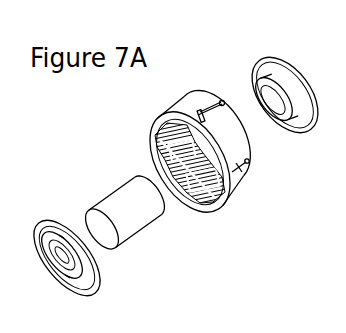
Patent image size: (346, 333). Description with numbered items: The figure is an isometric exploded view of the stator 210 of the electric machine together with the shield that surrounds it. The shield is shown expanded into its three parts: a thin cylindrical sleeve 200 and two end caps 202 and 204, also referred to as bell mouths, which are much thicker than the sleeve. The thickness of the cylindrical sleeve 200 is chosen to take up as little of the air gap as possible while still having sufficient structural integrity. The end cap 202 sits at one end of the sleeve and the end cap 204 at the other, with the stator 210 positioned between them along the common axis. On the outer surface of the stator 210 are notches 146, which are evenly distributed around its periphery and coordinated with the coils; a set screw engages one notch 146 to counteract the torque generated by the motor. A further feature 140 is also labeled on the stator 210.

The slot 140 is at (197, 108).
The notch 146 is at (207, 112).
The cylindrical sleeve 200 is at (125, 202).
The end cap 202 is at (55, 232).
The end cap 204 is at (273, 72).
The stator 210 is at (237, 192).